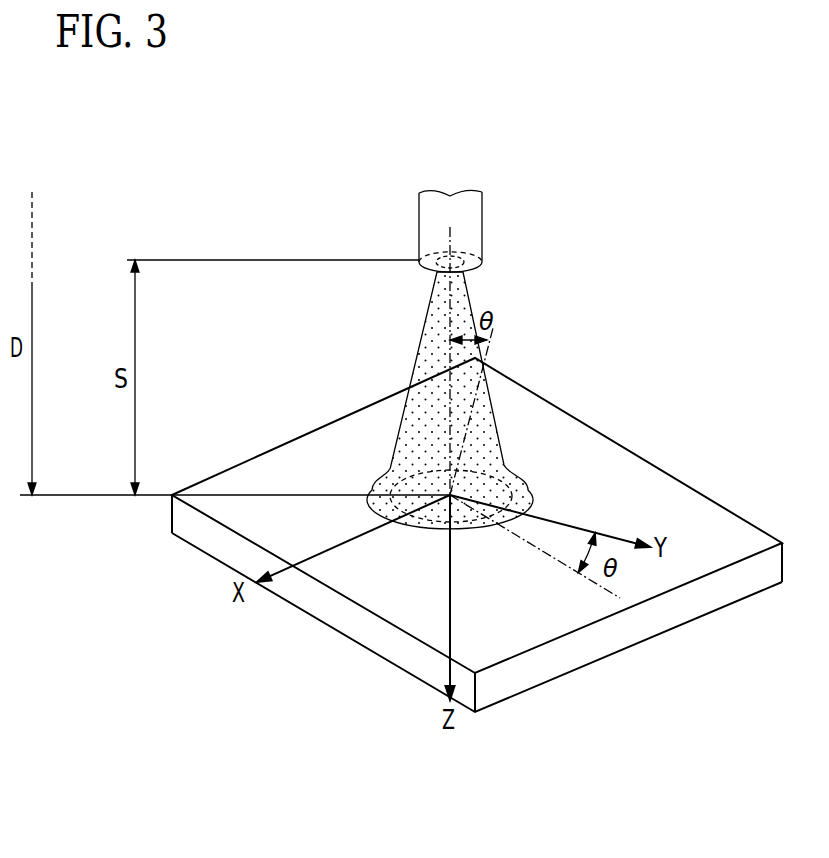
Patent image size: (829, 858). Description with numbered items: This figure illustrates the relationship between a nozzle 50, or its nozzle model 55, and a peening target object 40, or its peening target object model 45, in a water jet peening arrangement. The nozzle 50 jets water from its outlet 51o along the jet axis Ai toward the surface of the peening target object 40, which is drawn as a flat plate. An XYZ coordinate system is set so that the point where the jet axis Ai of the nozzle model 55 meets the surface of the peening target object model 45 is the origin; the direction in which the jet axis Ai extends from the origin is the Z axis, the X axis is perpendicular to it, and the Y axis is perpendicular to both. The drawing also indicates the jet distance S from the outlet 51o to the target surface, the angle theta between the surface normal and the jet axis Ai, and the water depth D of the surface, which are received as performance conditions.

The nozzle 50 is at (516, 224).
The nozzle model 55 is at (516, 224).
The outlet 51o is at (464, 262).
The jet axis Ai is at (462, 301).
The peening target object 40 is at (477, 535).
The peening target object model 45 is at (637, 446).